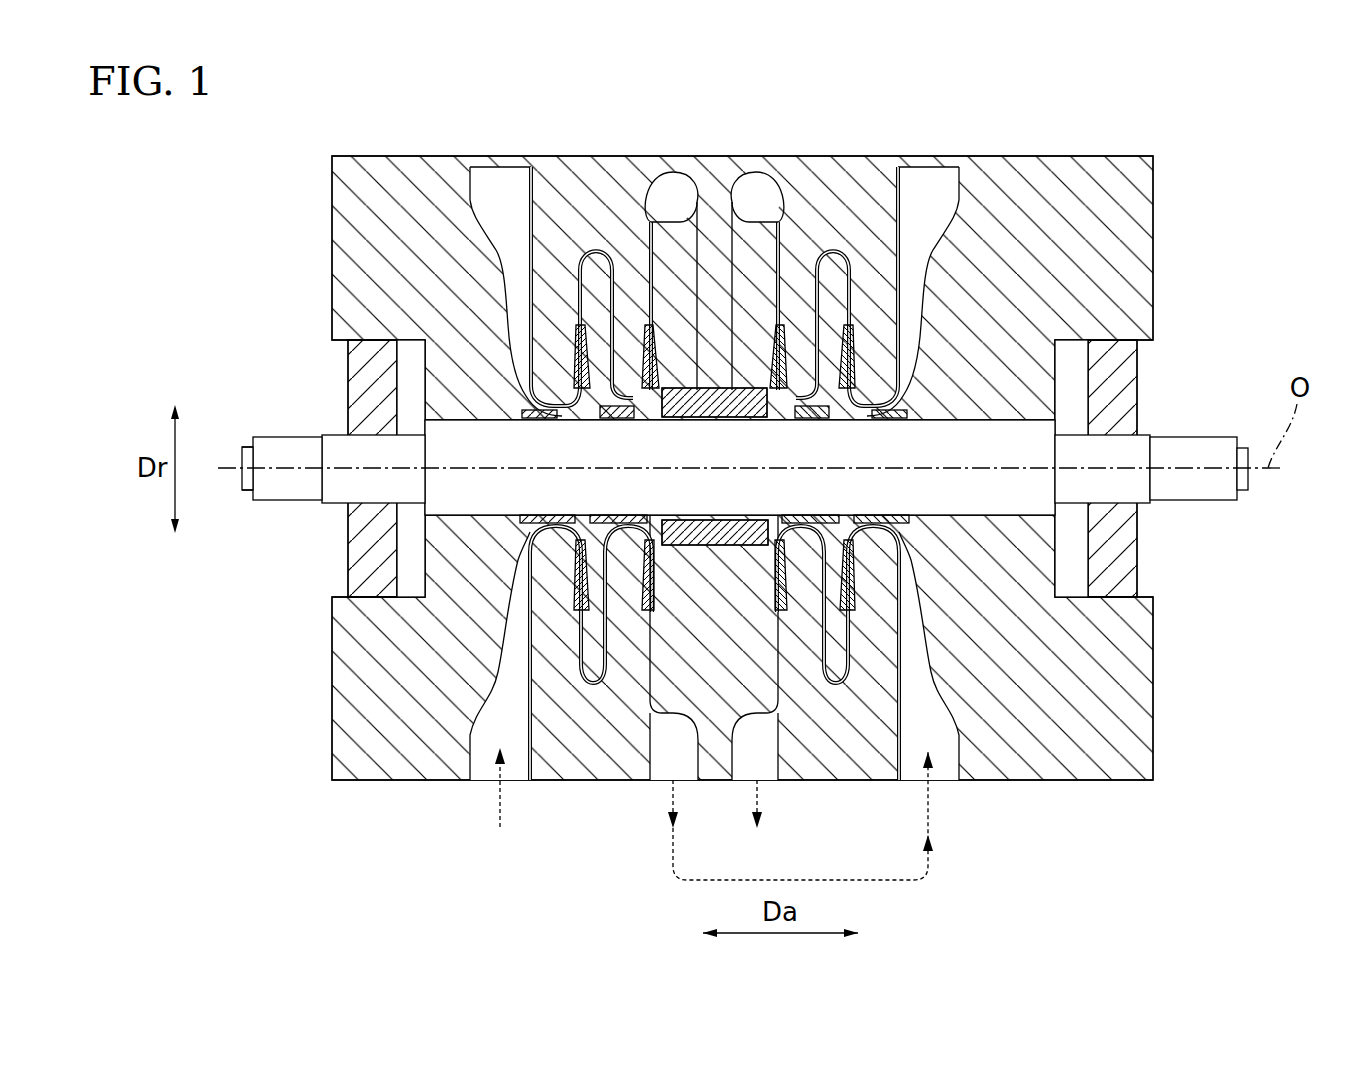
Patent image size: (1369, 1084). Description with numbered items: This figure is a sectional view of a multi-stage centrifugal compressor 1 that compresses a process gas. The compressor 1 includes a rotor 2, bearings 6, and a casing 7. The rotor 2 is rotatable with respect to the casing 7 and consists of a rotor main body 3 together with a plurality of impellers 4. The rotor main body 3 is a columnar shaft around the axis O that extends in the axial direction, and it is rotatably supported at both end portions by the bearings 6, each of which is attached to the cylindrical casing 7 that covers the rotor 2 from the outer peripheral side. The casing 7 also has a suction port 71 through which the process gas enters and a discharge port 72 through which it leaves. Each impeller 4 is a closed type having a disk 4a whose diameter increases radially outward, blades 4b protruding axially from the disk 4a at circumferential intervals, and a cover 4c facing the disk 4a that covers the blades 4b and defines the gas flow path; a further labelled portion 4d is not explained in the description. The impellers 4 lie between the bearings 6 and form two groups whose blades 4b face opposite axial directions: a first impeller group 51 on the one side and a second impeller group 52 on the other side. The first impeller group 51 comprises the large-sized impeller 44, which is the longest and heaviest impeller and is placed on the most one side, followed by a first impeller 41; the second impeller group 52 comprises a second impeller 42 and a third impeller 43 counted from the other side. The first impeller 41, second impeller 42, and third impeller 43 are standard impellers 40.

The centrifugal compressor 1 is at (1200, 122).
The rotor 2 is at (275, 428).
The rotor main body 3 is at (1032, 446).
The impeller 4 is at (882, 477).
The standard impeller 40 is at (882, 477).
The disk 4a is at (577, 369).
The blade 4b is at (587, 372).
The cover 4c is at (603, 372).
The seal end portion 4d is at (852, 369).
The bearing 6 is at (374, 549).
The casing 7 is at (1153, 198).
The first impeller 41 is at (636, 560).
The second impeller 42 is at (873, 571).
The third impeller 43 is at (803, 586).
The large-sized impeller 44 is at (563, 555).
The first impeller group 51 is at (475, 858).
The second impeller group 52 is at (1268, 643).
The suction port 71 is at (527, 207).
The discharge port 72 is at (952, 178).